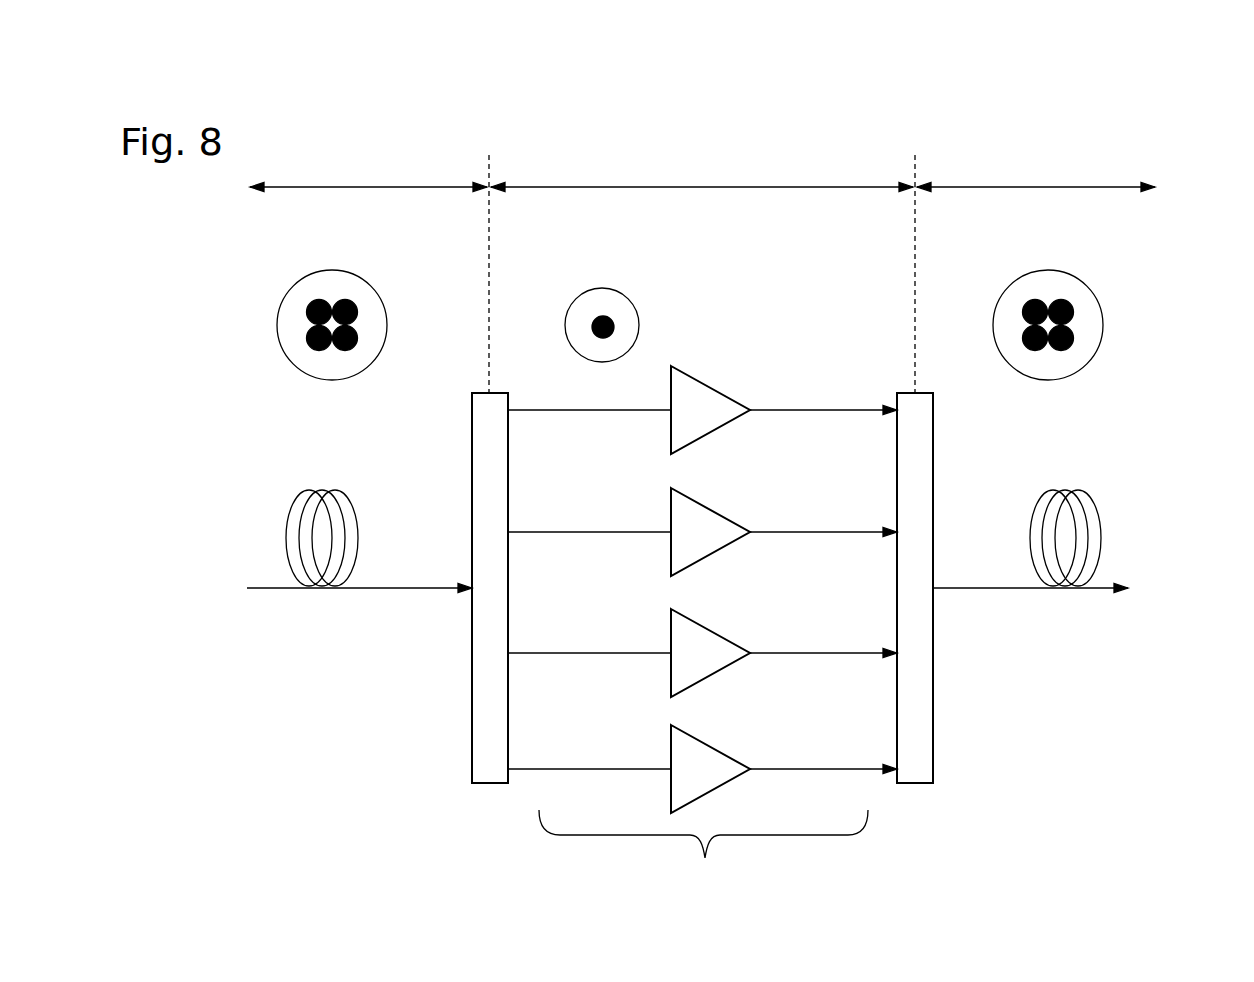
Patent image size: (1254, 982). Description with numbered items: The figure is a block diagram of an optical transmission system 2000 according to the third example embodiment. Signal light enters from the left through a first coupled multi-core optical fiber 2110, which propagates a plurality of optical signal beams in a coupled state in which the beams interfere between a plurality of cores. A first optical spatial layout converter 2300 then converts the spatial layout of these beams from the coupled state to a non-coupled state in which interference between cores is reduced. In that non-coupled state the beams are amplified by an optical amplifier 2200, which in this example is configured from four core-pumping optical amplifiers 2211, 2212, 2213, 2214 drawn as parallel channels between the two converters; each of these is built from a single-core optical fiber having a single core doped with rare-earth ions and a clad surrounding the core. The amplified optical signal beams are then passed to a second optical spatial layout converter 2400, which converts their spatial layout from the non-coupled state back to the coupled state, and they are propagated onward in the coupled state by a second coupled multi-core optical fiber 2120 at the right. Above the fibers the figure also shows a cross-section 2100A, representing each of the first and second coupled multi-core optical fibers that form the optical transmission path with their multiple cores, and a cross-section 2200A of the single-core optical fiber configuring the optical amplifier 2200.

The optical transmission system 2000 is at (853, 130).
The cross-section of coupled multi-core optical fiber 2100A is at (285, 352).
The first coupled multi-core optical fiber 2110 is at (346, 490).
The second coupled multi-core optical fiber 2120 is at (1085, 490).
The optical amplifier 2200 is at (702, 612).
The cross-section of single-core optical fiber 2200A is at (630, 298).
The core-pumping optical amplifier 2211 is at (710, 386).
The core-pumping optical amplifier 2212 is at (713, 507).
The core-pumping optical amplifier 2213 is at (713, 629).
The core-pumping optical amplifier 2214 is at (713, 746).
The first optical spatial layout converter 2300 is at (484, 785).
The second optical spatial layout converter 2400 is at (912, 785).